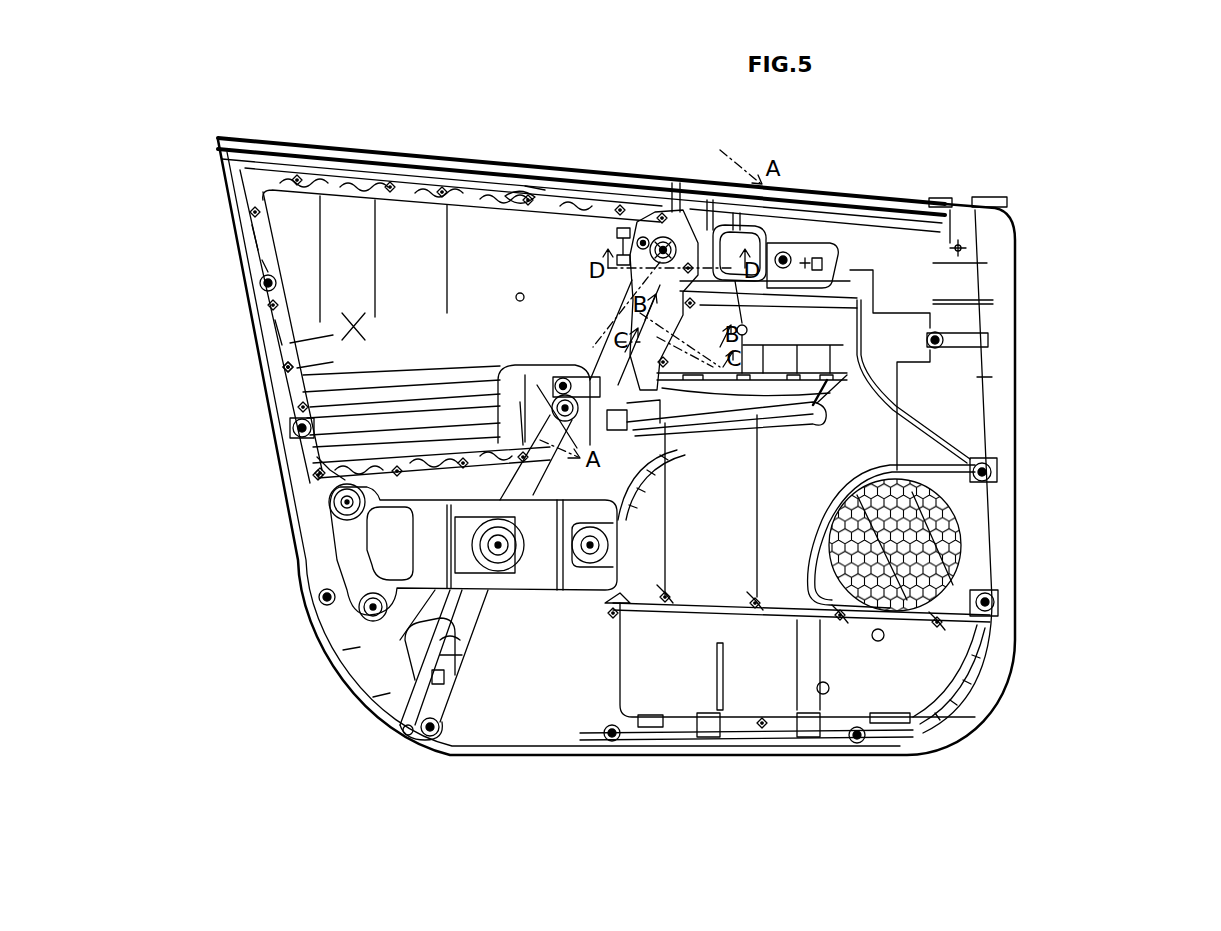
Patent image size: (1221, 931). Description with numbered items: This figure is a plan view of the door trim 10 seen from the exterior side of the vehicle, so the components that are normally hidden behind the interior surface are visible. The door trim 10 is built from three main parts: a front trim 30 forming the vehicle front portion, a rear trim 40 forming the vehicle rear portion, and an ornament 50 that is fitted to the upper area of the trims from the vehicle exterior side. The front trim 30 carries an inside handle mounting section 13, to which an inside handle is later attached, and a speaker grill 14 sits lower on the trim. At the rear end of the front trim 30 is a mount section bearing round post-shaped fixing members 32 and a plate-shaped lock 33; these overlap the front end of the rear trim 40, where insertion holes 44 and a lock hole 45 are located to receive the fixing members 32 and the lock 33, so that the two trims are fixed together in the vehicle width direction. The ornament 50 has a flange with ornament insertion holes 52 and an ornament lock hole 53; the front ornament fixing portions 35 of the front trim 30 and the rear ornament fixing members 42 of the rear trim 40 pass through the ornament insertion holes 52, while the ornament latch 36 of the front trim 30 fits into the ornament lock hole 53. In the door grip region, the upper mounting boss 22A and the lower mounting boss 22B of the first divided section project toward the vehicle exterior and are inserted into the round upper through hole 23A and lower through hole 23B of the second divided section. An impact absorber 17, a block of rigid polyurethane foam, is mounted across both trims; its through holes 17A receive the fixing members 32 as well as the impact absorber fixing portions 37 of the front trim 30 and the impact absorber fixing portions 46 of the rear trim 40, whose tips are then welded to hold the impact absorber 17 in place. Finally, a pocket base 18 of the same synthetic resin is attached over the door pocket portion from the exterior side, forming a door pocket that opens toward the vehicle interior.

The door trim 10 is at (185, 109).
The front trim 30 is at (886, 176).
The rear trim 40 is at (314, 120).
The ornament 50 is at (409, 233).
The ornament insertion holes 52 is at (520, 197).
The rear ornament fixing members 42 is at (530, 193).
The upper mounting boss 22A is at (665, 238).
The upper through hole 23A is at (643, 237).
The inside handle mounting section 13 is at (758, 240).
The ornament lock hole 53 is at (788, 256).
The front ornament fixing portions 35 is at (805, 410).
The ornament latch 36 is at (935, 297).
The lower through hole 23B is at (284, 368).
The lower mounting boss 22B is at (292, 427).
The through holes 17A is at (317, 457).
The speaker grill 14 is at (957, 523).
The impact absorber fixing portions 46 is at (373, 607).
The impact absorber 17 is at (358, 650).
The insertion holes 44 is at (390, 695).
The lock hole 45 is at (445, 690).
The lock 33 is at (447, 683).
The fixing members 32 is at (502, 548).
The impact absorber fixing portions 37 is at (635, 592).
The pocket base 18 is at (773, 683).